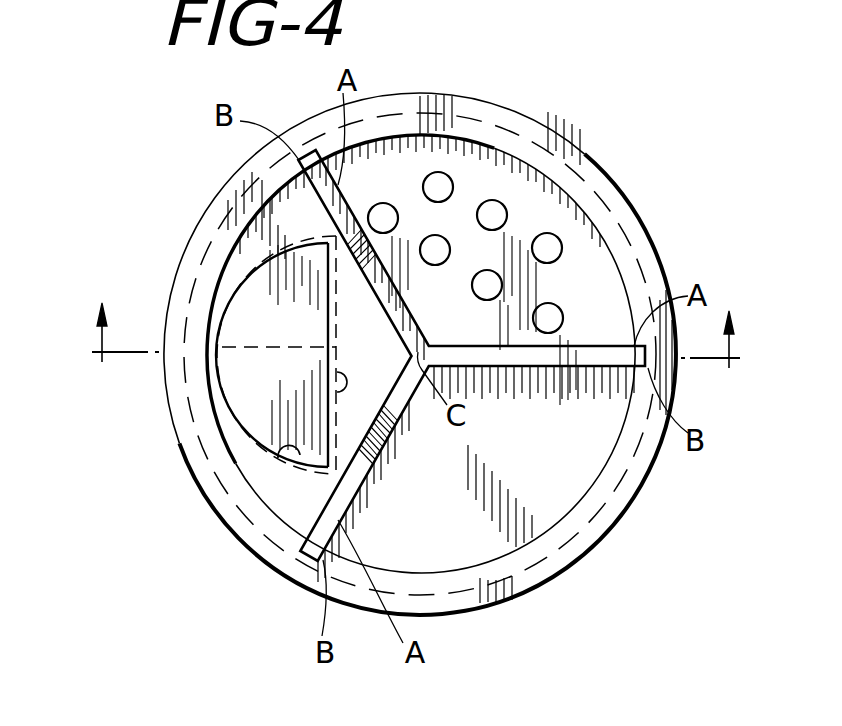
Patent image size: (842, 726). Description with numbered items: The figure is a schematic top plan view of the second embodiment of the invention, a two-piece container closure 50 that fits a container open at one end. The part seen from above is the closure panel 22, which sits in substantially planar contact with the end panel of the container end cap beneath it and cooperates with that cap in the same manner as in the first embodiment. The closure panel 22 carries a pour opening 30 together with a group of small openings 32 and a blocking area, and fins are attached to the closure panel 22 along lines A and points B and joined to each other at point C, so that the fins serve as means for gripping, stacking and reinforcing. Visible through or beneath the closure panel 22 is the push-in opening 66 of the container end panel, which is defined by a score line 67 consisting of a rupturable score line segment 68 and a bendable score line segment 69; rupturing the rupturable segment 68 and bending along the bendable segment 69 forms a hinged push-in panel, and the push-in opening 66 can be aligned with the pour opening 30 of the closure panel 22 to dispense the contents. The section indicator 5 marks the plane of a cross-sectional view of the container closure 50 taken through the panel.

The container closure 50 is at (620, 152).
The closure panel 22 is at (272, 561).
The pour opening 30 is at (268, 494).
The small openings 32 is at (545, 233).
The push-in opening 66 is at (283, 346).
The score line 67 is at (76, 431).
The rupturable score line segment 68 is at (250, 388).
The bendable score line segment 69 is at (335, 402).
The section line 5- 5 is at (416, 340).